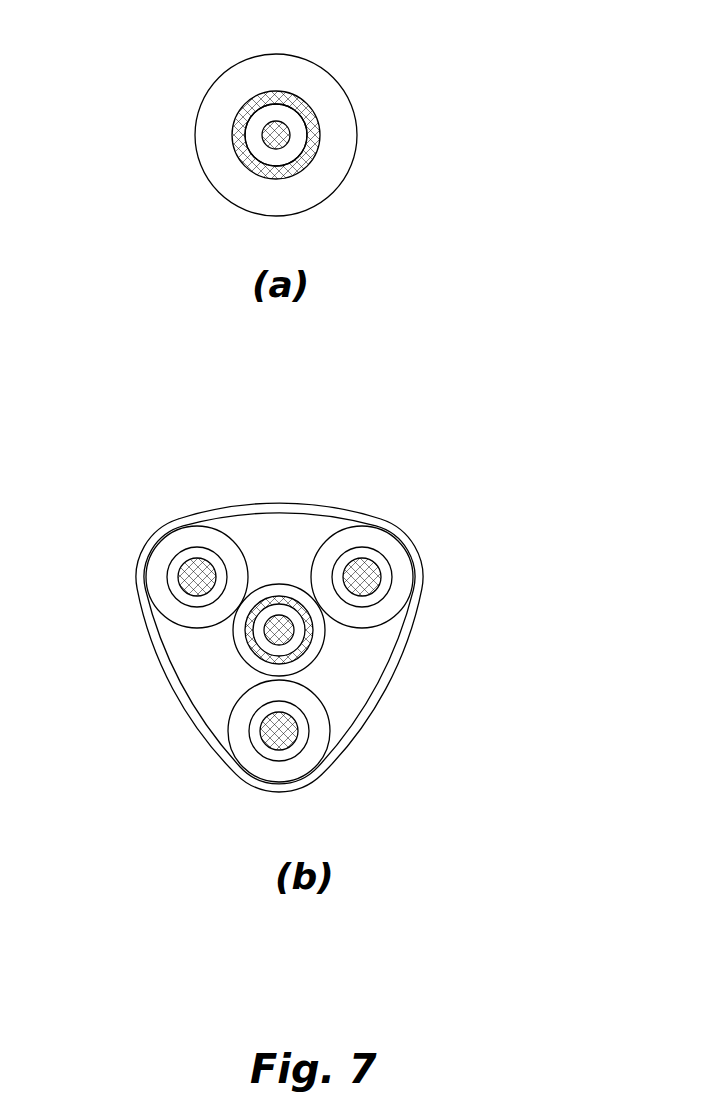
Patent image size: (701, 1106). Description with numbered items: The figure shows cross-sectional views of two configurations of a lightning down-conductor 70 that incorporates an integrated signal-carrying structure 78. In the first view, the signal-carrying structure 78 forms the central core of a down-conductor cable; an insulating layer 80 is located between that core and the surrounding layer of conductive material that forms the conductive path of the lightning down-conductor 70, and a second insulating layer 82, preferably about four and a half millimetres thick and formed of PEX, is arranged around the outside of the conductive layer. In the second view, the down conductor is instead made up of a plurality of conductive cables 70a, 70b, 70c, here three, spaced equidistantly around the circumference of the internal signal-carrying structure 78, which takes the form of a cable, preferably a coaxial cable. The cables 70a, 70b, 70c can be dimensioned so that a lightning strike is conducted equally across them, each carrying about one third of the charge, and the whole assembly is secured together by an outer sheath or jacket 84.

The lightning down-conductor 70 is at (250, 97).
The conductive cable 70a is at (163, 552).
The conductive cable 70b is at (400, 560).
The conductive cable 70c is at (300, 770).
The signal-carrying structure 78 is at (280, 127).
The insulating layer 80 is at (290, 157).
The second insulating layer 82 is at (207, 182).
The outer sheath or jacket 84 is at (185, 700).